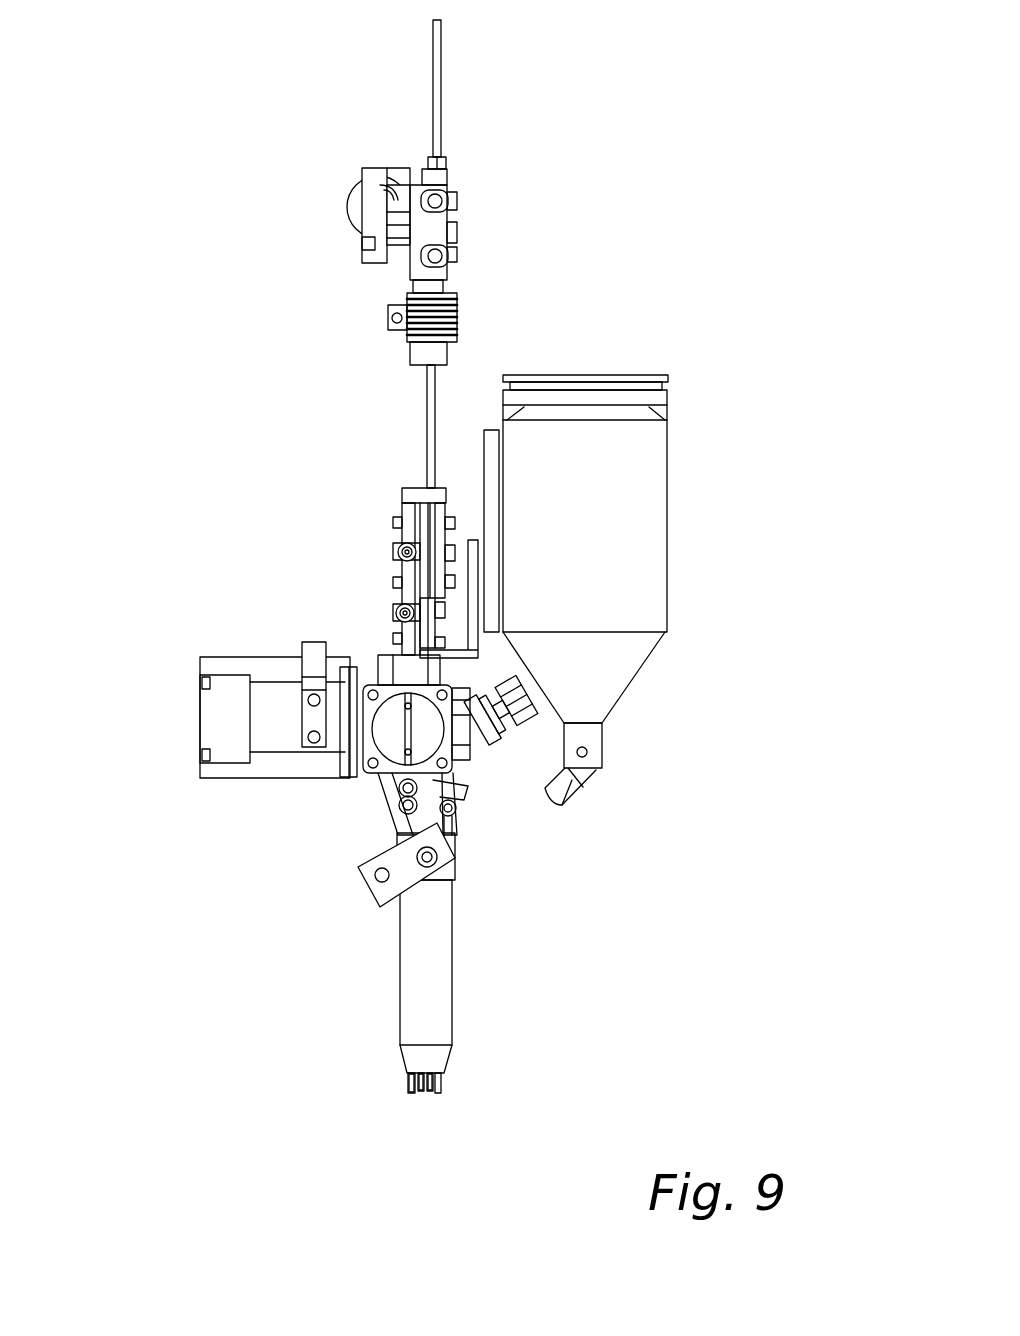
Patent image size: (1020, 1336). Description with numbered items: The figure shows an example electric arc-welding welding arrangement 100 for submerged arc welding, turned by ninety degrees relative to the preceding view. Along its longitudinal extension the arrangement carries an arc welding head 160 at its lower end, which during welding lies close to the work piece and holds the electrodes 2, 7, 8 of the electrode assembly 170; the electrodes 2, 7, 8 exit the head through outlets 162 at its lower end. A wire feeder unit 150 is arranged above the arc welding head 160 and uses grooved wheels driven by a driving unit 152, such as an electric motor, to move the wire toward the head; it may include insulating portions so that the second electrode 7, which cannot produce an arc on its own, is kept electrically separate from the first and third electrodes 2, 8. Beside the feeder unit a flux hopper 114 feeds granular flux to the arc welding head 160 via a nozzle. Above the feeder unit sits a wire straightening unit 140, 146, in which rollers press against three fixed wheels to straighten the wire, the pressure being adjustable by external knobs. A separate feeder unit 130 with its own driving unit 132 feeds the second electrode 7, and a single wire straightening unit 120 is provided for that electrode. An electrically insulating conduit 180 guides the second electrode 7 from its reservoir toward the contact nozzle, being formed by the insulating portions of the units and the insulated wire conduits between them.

The electric arc-welding welding arrangement 100 is at (585, 152).
The electrically insulating conduit 180 is at (430, 92).
The wire straightening unit for the second electrode 120 is at (455, 155).
The separate feeder unit 130 is at (466, 232).
The driving unit 132 is at (350, 193).
The wire straightening unit 140 is at (366, 563).
The feed assembly bracket 146 is at (435, 573).
The flux hopper 114 is at (667, 515).
The wire feeder unit 150 is at (492, 675).
The driving unit 152 is at (213, 718).
The arc welding head 160 is at (465, 960).
The outlets 162 is at (398, 1088).
The electrode assembly 170 is at (452, 1085).
The first electrode 2 is at (402, 1092).
The second electrode 7 is at (420, 1094).
The third electrode 8 is at (434, 1096).